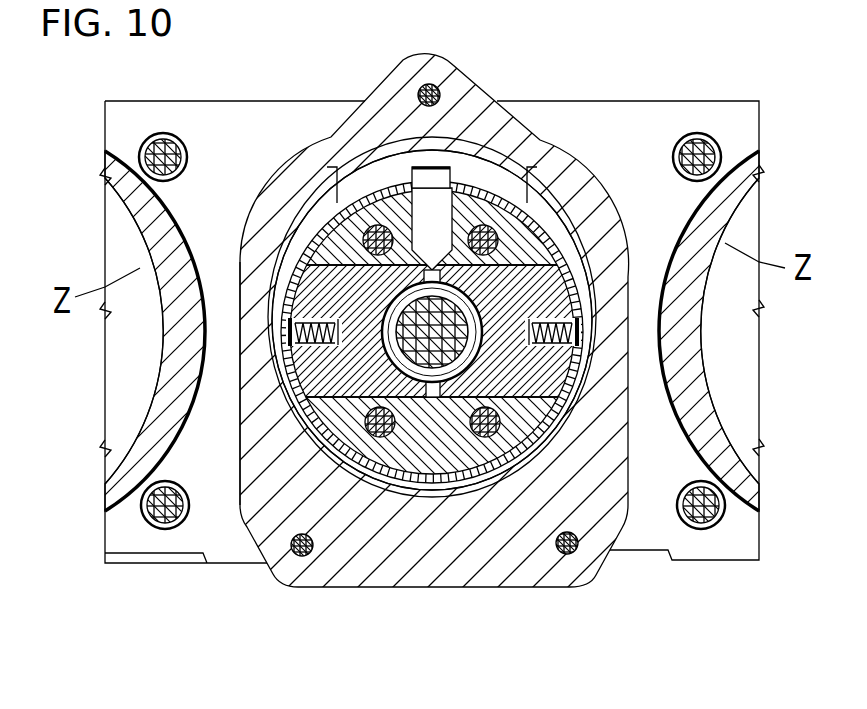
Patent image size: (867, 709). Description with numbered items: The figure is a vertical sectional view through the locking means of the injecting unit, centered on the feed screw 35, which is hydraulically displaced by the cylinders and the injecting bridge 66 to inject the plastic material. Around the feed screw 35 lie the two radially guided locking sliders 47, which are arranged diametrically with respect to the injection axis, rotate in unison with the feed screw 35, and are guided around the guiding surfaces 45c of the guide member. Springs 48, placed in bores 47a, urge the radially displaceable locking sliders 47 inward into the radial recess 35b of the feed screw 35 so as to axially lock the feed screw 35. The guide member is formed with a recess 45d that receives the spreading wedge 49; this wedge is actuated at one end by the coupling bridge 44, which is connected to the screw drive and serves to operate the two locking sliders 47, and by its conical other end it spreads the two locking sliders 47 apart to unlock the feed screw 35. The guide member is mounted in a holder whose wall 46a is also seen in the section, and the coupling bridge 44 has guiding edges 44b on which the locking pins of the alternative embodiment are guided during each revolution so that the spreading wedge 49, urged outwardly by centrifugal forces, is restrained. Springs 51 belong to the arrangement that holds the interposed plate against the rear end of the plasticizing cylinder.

The feed screw 35 is at (452, 340).
The radial recess 35b is at (484, 300).
The coupling bridge 44 is at (477, 112).
The guiding edges 44b is at (318, 204).
The guiding surfaces 45c is at (355, 205).
The recess 45d is at (455, 190).
The wall 46a is at (573, 220).
The locking sliders 47 is at (280, 250).
The bores 47a is at (262, 405).
The springs 48 is at (293, 322).
The spreading wedge 49 is at (441, 242).
The springs 51 is at (428, 84).
The injecting bridge 66 is at (654, 110).